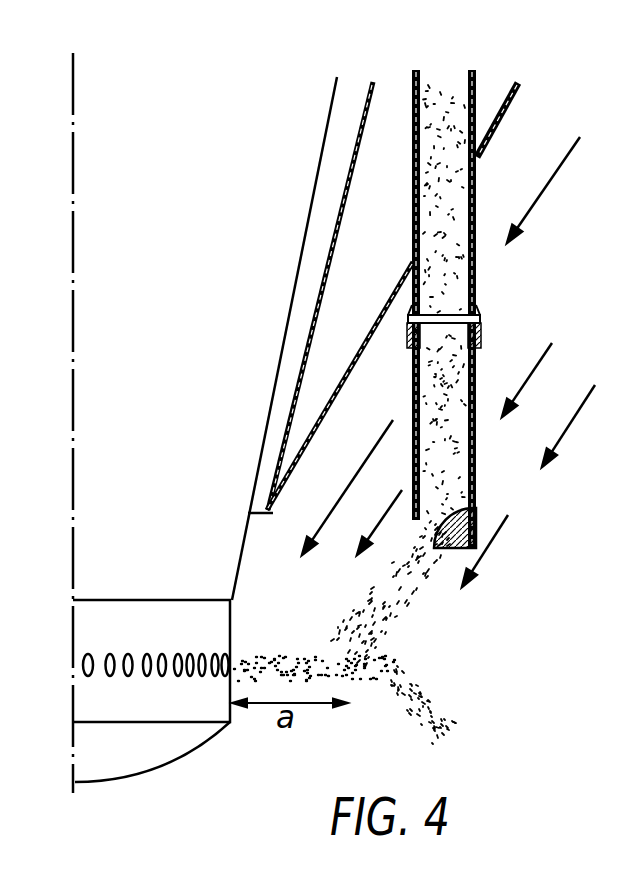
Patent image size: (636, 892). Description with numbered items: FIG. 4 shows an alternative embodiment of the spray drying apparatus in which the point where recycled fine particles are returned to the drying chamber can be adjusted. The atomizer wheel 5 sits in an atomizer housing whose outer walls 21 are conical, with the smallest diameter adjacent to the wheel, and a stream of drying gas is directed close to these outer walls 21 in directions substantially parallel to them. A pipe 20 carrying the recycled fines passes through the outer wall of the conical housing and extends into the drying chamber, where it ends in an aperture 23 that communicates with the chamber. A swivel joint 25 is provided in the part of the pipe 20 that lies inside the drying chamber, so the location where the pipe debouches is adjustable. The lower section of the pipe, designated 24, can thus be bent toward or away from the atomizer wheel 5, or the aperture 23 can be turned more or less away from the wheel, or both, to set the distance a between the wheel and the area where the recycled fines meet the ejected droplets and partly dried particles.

The atomizer wheel 5 is at (148, 600).
The pipe 20 is at (478, 188).
The outer wall of conical housing 21 is at (343, 382).
The aperture 23 is at (438, 533).
The lower tube section 24 is at (477, 450).
The swivel joint 25 is at (483, 334).